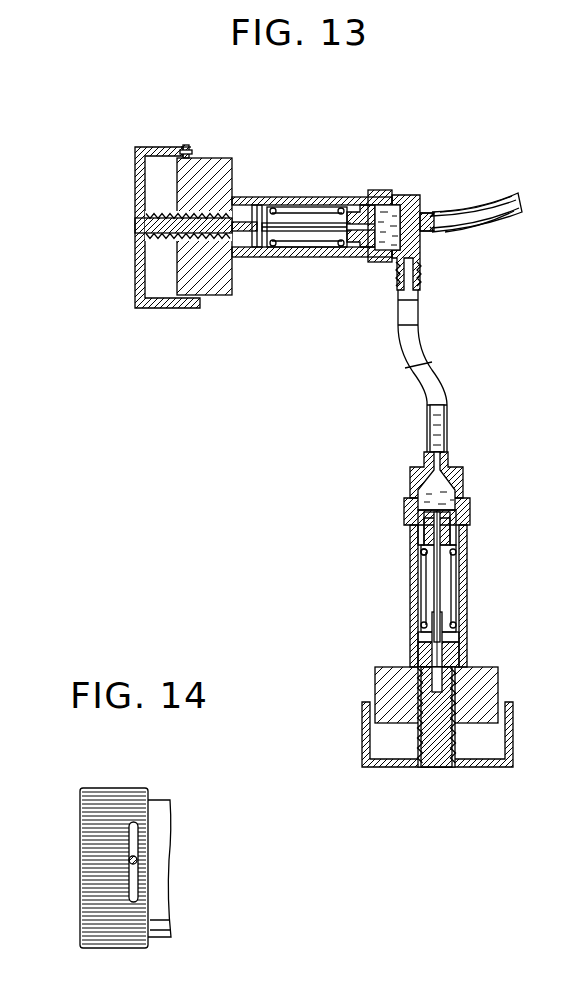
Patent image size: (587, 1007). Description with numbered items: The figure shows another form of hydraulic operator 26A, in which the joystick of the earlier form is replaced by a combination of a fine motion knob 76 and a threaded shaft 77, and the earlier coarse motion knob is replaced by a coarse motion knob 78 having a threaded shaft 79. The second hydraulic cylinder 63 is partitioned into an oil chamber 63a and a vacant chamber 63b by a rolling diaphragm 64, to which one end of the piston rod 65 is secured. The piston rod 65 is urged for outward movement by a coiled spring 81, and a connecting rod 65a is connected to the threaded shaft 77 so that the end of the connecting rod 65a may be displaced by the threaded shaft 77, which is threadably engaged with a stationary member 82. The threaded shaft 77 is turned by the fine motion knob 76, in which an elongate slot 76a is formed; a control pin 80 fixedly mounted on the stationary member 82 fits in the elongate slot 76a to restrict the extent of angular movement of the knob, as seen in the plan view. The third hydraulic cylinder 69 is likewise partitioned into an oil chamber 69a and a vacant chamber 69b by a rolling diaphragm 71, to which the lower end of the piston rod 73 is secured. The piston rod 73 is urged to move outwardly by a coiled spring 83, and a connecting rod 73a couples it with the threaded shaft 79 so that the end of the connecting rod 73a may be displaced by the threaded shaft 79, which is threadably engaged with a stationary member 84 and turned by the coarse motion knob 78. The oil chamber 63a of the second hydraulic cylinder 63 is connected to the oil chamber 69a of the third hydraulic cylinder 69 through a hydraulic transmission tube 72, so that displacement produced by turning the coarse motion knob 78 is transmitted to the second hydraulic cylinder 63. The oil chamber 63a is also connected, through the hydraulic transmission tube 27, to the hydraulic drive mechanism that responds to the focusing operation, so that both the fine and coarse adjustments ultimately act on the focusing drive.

In FIG. 13, the fine motion knob 76 is at (138, 192).
In FIG. 14, the fine motion knob 76 is at (86, 910).
In FIG. 13, the elongate slot 76a is at (187, 149).
In FIG. 14, the elongate slot 76a is at (136, 838).
In FIG. 13, the control pin 80 is at (193, 150).
In FIG. 14, the control pin 80 is at (140, 860).
In FIG. 13, the stationary member 82 is at (232, 166).
In FIG. 14, the stationary member 82 is at (160, 805).
In FIG. 13, the coiled spring 81 is at (258, 205).
In FIG. 13, the vacant chamber 63b is at (348, 210).
In FIG. 13, the rolling diaphragm 64 is at (362, 205).
In FIG. 13, the second hydraulic cylinder 63 is at (410, 200).
In FIG. 13, the hydraulic transmission tube 27 is at (498, 222).
In FIG. 13, the threaded shaft 77 is at (170, 243).
In FIG. 13, the connecting rod 65a is at (252, 247).
In FIG. 13, the piston rod 65 is at (302, 235).
In FIG. 13, the oil chamber 63a is at (390, 250).
In FIG. 13, the hydraulic transmission tube 72 is at (430, 378).
In FIG. 13, the hydraulic operator 26A is at (368, 372).
In FIG. 13, the third hydraulic cylinder 69 is at (410, 480).
In FIG. 13, the oil chamber 69a is at (463, 482).
In FIG. 13, the rolling diaphragm 71 is at (425, 540).
In FIG. 13, the vacant chamber 69b is at (464, 548).
In FIG. 13, the coiled spring 83 is at (420, 565).
In FIG. 13, the piston rod 73 is at (445, 600).
In FIG. 13, the connecting rod 73a is at (432, 660).
In FIG. 13, the stationary member 84 is at (385, 680).
In FIG. 13, the threaded shaft 79 is at (445, 712).
In FIG. 13, the coarse motion knob 78 is at (513, 738).